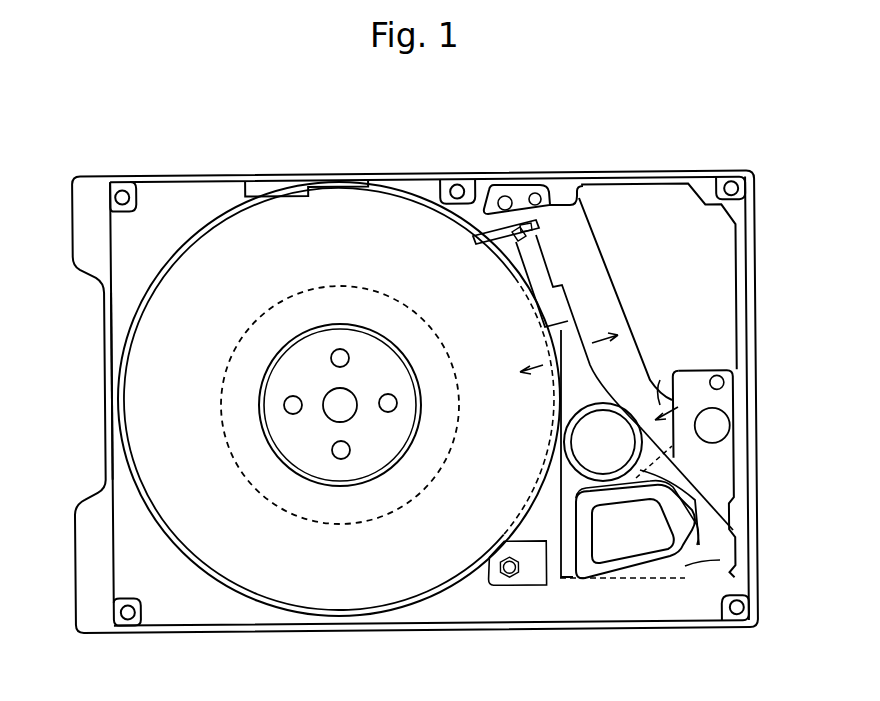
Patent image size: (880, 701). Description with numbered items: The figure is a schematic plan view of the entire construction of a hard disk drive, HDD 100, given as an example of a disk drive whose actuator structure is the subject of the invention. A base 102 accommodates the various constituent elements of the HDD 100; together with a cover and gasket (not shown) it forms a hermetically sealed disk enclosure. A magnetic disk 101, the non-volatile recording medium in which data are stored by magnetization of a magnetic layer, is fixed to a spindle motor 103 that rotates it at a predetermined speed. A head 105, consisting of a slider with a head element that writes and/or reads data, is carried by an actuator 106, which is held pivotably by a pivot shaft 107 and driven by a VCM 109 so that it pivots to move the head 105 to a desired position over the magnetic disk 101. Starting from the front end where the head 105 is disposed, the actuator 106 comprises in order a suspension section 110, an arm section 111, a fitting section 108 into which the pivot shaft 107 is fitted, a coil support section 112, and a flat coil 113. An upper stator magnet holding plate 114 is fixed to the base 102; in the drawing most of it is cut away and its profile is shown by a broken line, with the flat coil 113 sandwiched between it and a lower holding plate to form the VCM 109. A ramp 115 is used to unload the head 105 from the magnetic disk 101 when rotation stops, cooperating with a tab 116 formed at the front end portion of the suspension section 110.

The HDD 100 is at (741, 122).
The magnetic disk 101 is at (316, 600).
The base 102 is at (137, 584).
The spindle motor 103 is at (245, 391).
The head 105 is at (528, 239).
The actuator 106 is at (672, 402).
The pivot shaft 107 is at (588, 447).
The fitting section 108 is at (655, 392).
The VCM 109 is at (619, 600).
The suspension section 110 is at (540, 277).
The arm section 111 is at (590, 368).
The coil support section 112 is at (528, 486).
The flat coil 113 is at (655, 558).
The upper stator magnet holding plate 114 is at (518, 558).
The ramp 115 is at (493, 185).
The tab 116 is at (500, 250).